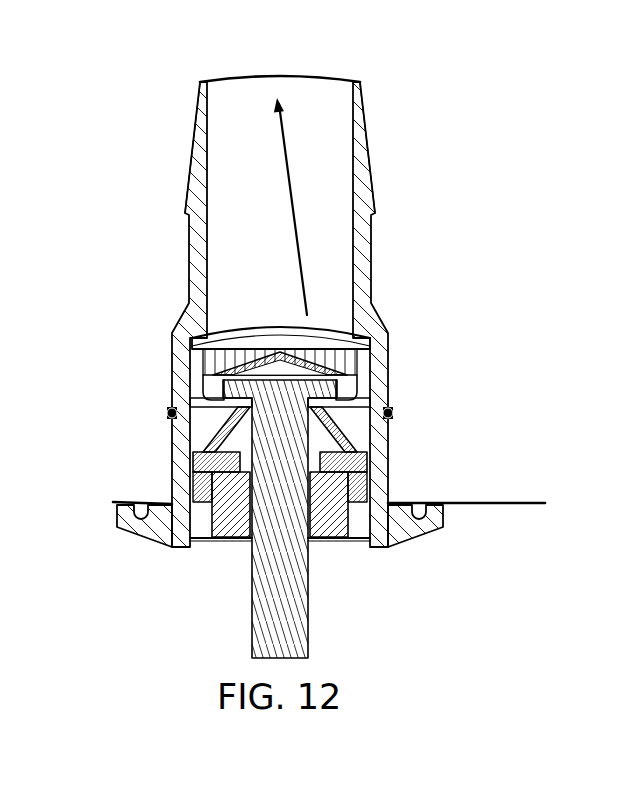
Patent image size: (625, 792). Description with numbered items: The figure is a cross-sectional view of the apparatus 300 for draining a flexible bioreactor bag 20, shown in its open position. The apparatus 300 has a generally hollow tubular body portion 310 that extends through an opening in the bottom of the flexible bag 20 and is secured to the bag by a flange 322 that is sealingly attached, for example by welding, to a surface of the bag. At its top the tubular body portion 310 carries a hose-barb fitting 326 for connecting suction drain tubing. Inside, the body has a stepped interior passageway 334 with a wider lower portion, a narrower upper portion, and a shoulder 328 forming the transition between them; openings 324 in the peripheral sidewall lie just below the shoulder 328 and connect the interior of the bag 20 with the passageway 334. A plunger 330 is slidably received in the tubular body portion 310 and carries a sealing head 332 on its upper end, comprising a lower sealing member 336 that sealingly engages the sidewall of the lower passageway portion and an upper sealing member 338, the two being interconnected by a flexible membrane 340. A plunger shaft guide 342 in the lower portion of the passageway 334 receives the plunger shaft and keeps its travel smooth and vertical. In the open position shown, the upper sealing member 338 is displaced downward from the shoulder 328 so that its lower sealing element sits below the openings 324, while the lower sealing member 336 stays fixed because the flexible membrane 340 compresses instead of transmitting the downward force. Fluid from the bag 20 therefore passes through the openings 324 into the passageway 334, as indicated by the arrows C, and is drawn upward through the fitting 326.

The apparatus 300 is at (346, 50).
The stepped interior passageway 334 is at (208, 108).
The hose-barb fitting 326 is at (362, 153).
The tubular body portion 310 is at (362, 268).
The shoulder 328 is at (360, 333).
The openings 324 is at (370, 369).
The upper sealing member 338 is at (207, 382).
The plunger shaft guide 342 is at (207, 435).
The sealing head 332 is at (362, 440).
The lower sealing member 336 is at (365, 478).
The flexible membrane 340 is at (213, 542).
The flange 322 is at (427, 545).
The plunger 330 is at (298, 607).
The flexible bioreactor bag 20 is at (527, 500).
The arrows C is at (290, 195).